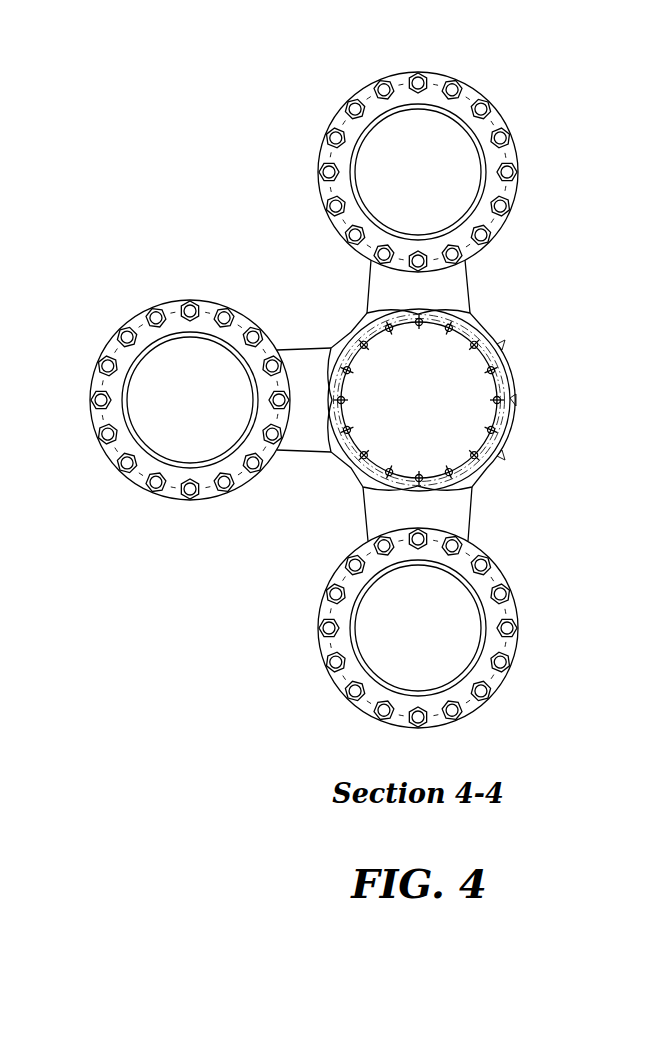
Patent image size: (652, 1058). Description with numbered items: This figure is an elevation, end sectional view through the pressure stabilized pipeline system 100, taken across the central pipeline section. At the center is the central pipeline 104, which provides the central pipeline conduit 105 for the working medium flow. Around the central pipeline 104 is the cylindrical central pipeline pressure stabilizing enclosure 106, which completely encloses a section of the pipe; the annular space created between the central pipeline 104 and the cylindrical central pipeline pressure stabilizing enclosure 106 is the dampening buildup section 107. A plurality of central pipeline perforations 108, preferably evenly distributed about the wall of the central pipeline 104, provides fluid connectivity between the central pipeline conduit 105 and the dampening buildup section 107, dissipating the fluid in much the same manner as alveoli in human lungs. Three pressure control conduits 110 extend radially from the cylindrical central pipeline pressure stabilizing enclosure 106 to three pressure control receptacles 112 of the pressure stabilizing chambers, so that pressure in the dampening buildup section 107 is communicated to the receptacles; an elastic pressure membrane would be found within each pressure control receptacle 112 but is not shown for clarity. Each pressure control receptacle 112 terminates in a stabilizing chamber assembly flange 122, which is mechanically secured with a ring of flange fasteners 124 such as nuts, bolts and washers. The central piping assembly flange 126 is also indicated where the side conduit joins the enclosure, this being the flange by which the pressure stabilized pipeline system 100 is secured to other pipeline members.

The pressure stabilized pipeline system 100 is at (530, 549).
The central pipeline 104 is at (508, 368).
The central pipeline conduit 105 is at (447, 355).
The cylindrical central pipeline pressure stabilizing enclosure 106 is at (517, 405).
The dampening buildup section 107 is at (510, 447).
The central pipeline perforations 108 is at (346, 371).
The pressure control conduit 110 is at (392, 293).
The pressure control receptacle 112 is at (404, 165).
The stabilizing chamber assembly flange 122 is at (467, 95).
The flange fastener 124 is at (510, 173).
The central piping assembly flange 126 is at (335, 453).